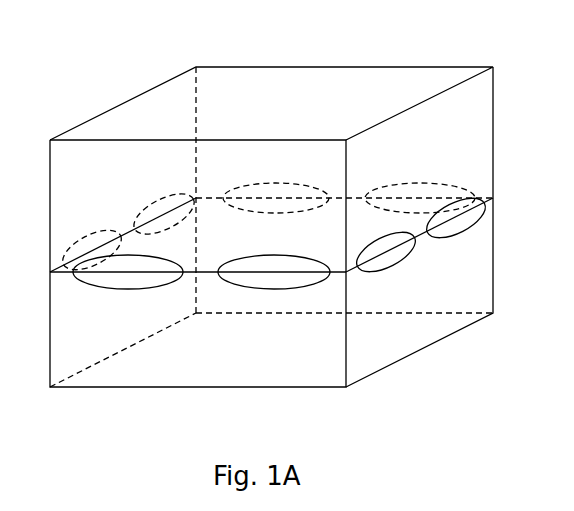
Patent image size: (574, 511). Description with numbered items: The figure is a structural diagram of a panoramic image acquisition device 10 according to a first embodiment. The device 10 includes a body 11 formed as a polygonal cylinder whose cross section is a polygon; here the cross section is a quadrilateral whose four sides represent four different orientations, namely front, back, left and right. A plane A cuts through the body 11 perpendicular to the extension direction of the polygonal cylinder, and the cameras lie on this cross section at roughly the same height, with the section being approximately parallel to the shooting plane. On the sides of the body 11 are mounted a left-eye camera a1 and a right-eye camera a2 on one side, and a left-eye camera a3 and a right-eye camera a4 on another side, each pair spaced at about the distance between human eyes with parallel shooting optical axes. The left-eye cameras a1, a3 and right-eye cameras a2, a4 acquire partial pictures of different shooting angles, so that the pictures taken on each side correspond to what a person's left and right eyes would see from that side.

The panoramic image acquisition device 10 is at (120, 55).
The body 11 is at (333, 82).
The plane A is at (271, 230).
The left-eye camera a1 is at (274, 296).
The right-eye camera a2 is at (128, 296).
The left-eye camera a3 is at (457, 233).
The right-eye camera a4 is at (386, 270).